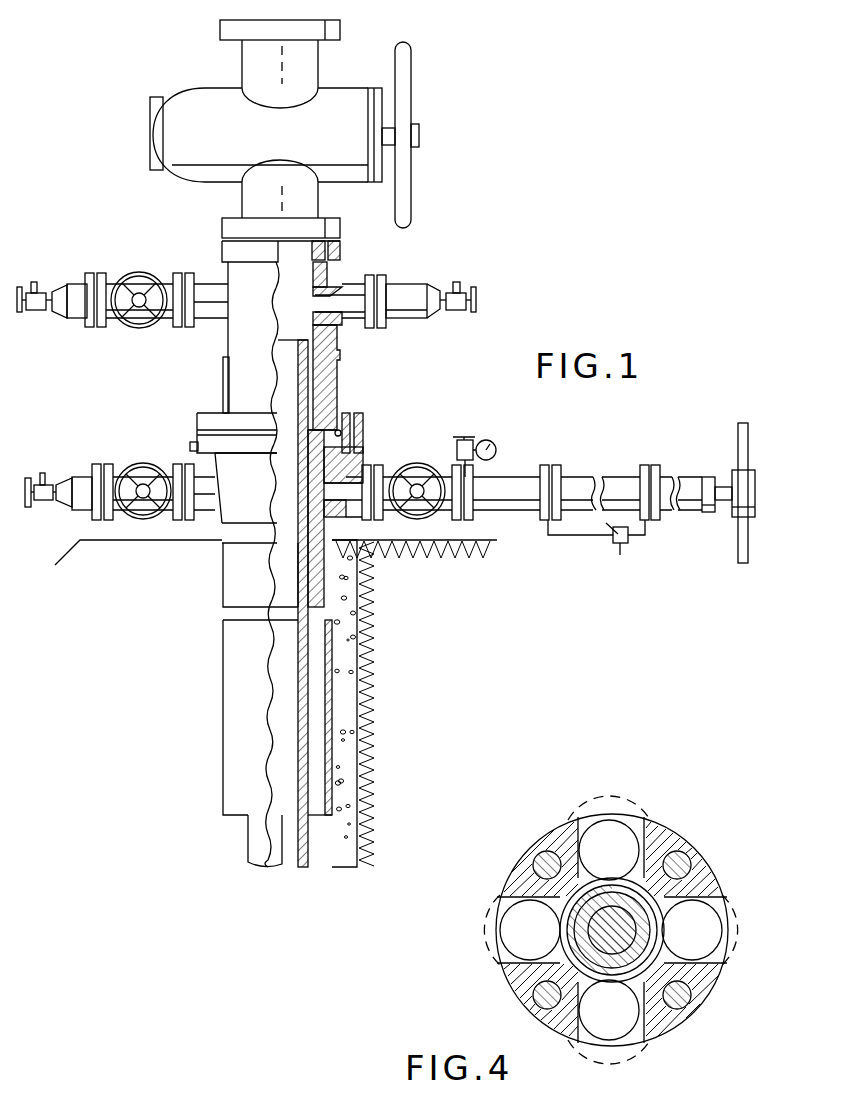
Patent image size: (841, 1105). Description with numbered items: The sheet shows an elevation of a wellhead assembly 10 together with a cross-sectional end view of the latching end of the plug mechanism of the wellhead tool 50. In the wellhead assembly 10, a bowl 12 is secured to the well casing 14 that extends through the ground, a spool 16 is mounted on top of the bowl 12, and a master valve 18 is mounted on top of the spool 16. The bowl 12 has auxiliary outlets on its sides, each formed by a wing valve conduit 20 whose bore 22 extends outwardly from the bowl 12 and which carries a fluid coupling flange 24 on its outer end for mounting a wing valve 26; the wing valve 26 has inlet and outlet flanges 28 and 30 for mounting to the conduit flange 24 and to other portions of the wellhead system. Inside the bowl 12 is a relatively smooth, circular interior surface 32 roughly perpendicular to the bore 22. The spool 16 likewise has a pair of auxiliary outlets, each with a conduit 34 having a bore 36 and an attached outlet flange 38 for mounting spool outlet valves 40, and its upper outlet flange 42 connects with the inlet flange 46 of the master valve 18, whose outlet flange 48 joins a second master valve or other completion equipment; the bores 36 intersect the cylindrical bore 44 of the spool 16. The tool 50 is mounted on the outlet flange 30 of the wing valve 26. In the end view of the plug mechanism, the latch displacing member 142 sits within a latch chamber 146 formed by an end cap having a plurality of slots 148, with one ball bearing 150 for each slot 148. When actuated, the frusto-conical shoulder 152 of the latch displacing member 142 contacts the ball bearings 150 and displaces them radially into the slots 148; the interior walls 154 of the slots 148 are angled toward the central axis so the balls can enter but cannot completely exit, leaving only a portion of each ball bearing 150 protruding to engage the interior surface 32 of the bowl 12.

In FIG. 1, the wellhead assembly 10 is at (505, 285).
In FIG. 1, the bowl 12 is at (228, 520).
In FIG. 1, the well casing 14 is at (358, 665).
In FIG. 1, the spool 16 is at (238, 372).
In FIG. 1, the master valve 18 is at (182, 108).
In FIG. 1, the wing valve conduit 20 is at (212, 478).
In FIG. 1, the bore 22 is at (325, 492).
In FIG. 1, the fluid coupling flange 24 is at (370, 522).
In FIG. 1, the wing valve 26 is at (415, 478).
In FIG. 1, the fluid coupling flange 28 is at (385, 524).
In FIG. 1, the fluid coupling flange 30 is at (440, 524).
In FIG. 1, the interior surface 32 is at (300, 463).
In FIG. 1, the conduit 34 is at (210, 282).
In FIG. 1, the bore 36 is at (318, 300).
In FIG. 1, the outlet flange 38 is at (186, 327).
In FIG. 1, the spool outlet valve 40 is at (136, 272).
In FIG. 1, the outlet flange 42 is at (222, 236).
In FIG. 1, the cylindrical bore 44 is at (311, 270).
In FIG. 1, the inlet flange 46 is at (341, 228).
In FIG. 1, the outlet flange 48 is at (342, 31).
In FIG. 1, the tool 50 is at (600, 466).
In FIG. 4, the latch displacing member 142 is at (592, 922).
In FIG. 4, the latch chamber 146 is at (655, 896).
In FIG. 4, the slots 148 is at (716, 915).
In FIG. 4, the ball bearings 150 is at (611, 930).
In FIG. 4, the frusto-conical shoulder 152 is at (650, 978).
In FIG. 4, the interior walls 154 is at (628, 820).